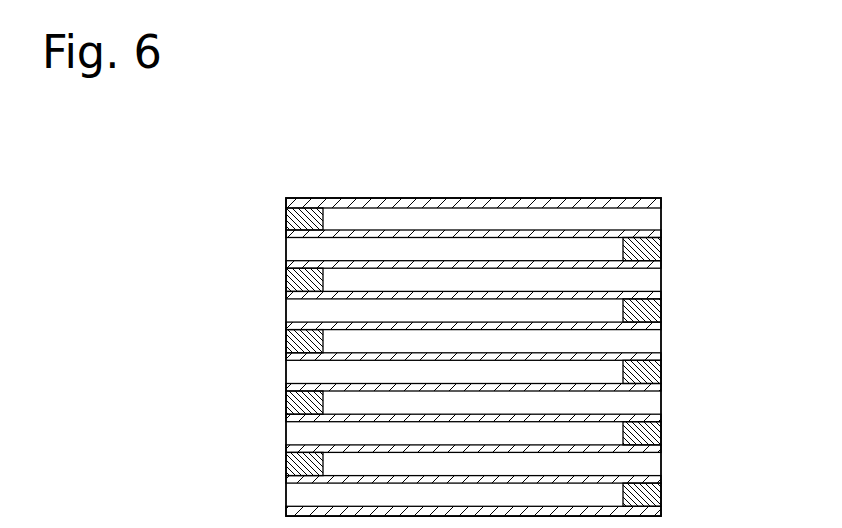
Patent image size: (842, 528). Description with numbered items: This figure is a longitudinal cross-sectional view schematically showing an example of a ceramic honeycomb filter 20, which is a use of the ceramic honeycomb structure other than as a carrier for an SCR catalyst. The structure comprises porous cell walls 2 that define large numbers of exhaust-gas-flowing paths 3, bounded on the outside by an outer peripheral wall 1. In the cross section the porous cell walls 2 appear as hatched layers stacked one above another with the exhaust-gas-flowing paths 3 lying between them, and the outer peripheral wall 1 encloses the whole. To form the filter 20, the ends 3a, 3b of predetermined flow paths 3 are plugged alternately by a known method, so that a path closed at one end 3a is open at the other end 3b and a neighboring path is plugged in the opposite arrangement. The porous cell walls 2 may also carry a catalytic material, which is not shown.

The ceramic honeycomb filter 20 is at (288, 164).
The outer peripheral wall 1 is at (360, 204).
The porous cell walls 2 is at (498, 236).
The exhaust-gas-flowing paths 3 is at (428, 250).
The end of flow path 3a is at (305, 284).
The end of flow path 3b is at (646, 308).